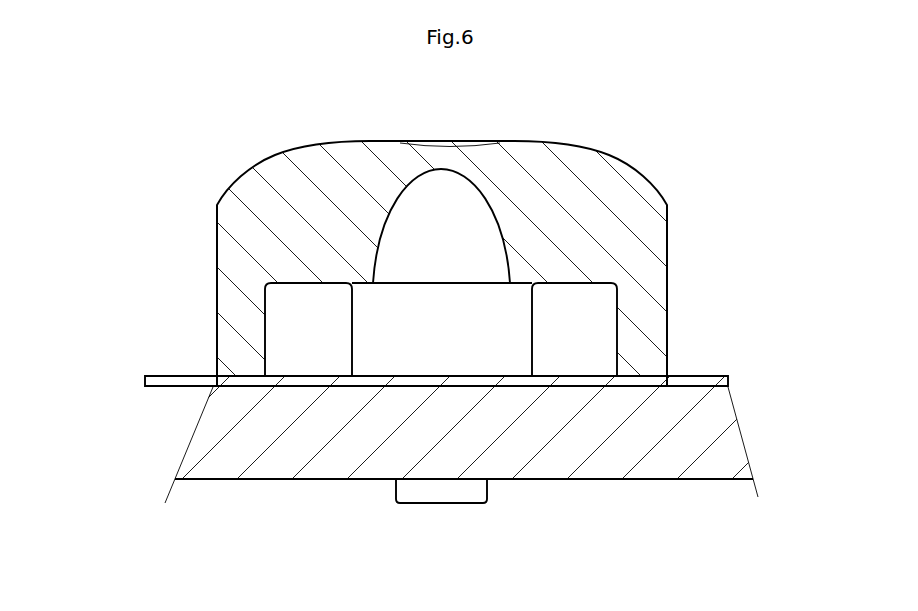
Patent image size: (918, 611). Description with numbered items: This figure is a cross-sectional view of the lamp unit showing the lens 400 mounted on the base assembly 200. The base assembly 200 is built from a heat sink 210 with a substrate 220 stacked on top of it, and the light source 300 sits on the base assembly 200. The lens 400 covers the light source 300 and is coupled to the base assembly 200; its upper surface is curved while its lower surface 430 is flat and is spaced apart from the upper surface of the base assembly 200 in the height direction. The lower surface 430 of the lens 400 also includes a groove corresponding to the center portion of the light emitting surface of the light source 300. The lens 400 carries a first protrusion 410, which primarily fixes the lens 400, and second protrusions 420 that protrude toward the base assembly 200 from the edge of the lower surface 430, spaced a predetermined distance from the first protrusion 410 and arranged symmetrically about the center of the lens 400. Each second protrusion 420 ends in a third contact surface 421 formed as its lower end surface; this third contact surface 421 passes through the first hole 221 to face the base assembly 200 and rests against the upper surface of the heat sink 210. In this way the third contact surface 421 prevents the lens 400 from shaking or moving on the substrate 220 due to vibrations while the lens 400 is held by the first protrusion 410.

The base assembly 200 is at (90, 377).
The heat sink 210 is at (178, 436).
The substrate 220 is at (147, 380).
The first hole 221 is at (178, 376).
The light source 300 is at (434, 316).
The lens 400 is at (622, 151).
The first protrusion 410 is at (442, 490).
The second protrusion 420 is at (318, 285).
The third contact surface 421 is at (240, 378).
The lower surface 430 is at (222, 246).